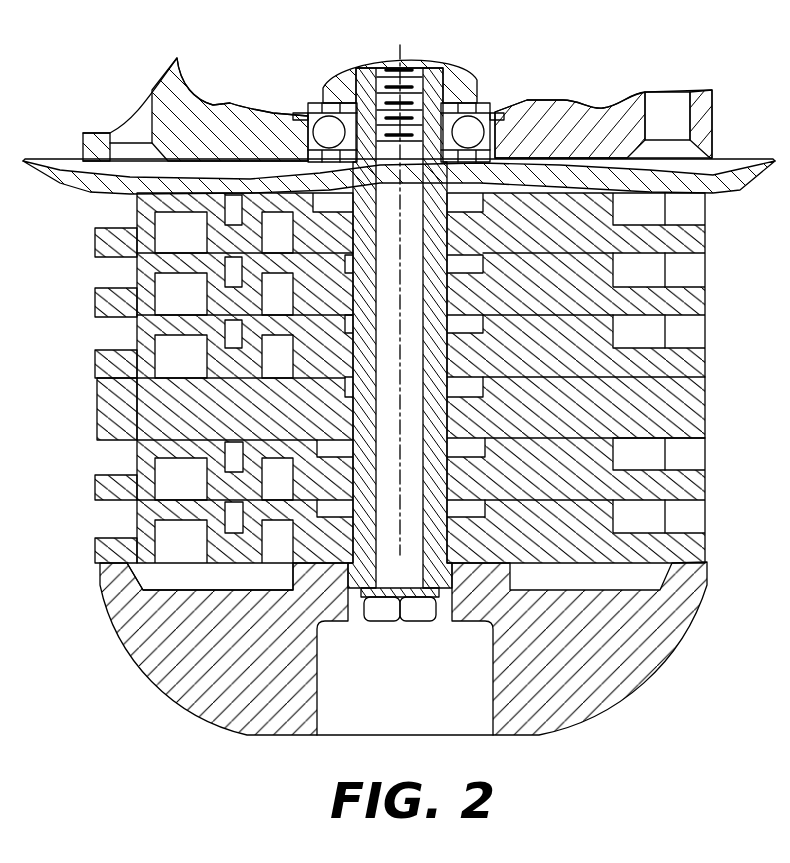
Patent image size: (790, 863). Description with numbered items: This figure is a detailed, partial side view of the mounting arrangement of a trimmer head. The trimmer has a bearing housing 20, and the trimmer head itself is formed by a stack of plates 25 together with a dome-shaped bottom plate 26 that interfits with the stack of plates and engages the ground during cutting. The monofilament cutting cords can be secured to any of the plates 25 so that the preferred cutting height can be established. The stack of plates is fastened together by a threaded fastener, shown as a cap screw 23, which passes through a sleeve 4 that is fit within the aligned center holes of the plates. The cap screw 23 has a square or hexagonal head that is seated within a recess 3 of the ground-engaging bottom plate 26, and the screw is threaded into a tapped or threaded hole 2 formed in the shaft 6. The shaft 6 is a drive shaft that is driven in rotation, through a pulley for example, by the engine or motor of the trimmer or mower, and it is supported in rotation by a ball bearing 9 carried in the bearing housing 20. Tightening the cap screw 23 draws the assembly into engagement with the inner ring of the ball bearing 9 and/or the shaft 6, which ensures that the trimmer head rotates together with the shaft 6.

The threaded hole 2 is at (368, 68).
The cap screw 23 is at (412, 70).
The ball bearing 9 is at (312, 103).
The shaft 6 is at (470, 80).
The bearing housing 20 is at (602, 108).
The stack of plates 25 is at (92, 563).
The sleeve 4 is at (356, 537).
The recess 3 is at (445, 614).
The dome-shaped bottom plate 26 is at (643, 690).